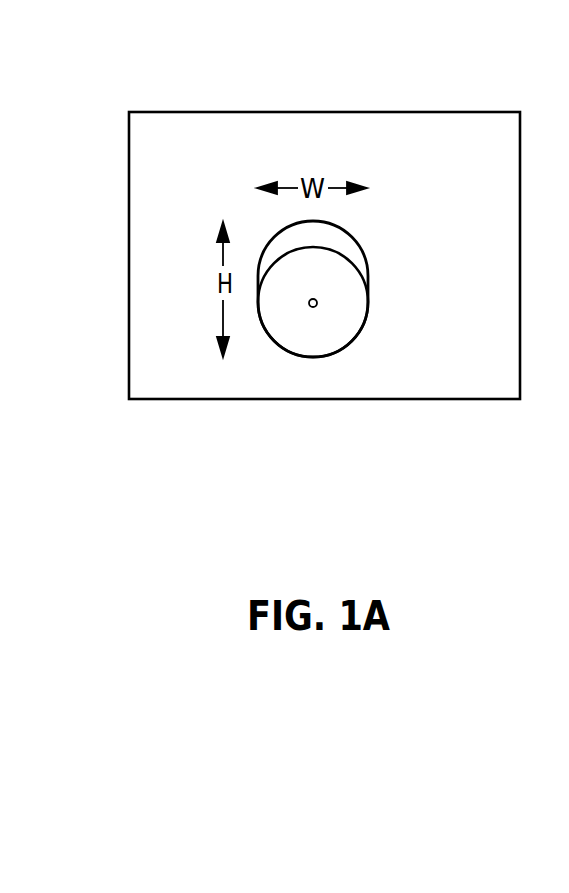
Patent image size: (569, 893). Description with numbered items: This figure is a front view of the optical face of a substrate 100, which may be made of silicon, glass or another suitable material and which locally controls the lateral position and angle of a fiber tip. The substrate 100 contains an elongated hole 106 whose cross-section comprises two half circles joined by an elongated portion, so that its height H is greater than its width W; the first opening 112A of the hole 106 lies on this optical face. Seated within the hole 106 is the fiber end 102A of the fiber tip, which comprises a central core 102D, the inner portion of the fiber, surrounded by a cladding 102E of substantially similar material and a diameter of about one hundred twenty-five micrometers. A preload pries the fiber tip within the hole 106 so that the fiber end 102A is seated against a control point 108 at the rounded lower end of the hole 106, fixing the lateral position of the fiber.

The substrate 100 is at (320, 145).
The elongated hole 106 is at (292, 235).
The fiber end 102A is at (342, 308).
The core 102D is at (308, 304).
The cladding 102E is at (300, 332).
The control point 108 is at (314, 358).
The first opening 112A is at (367, 270).